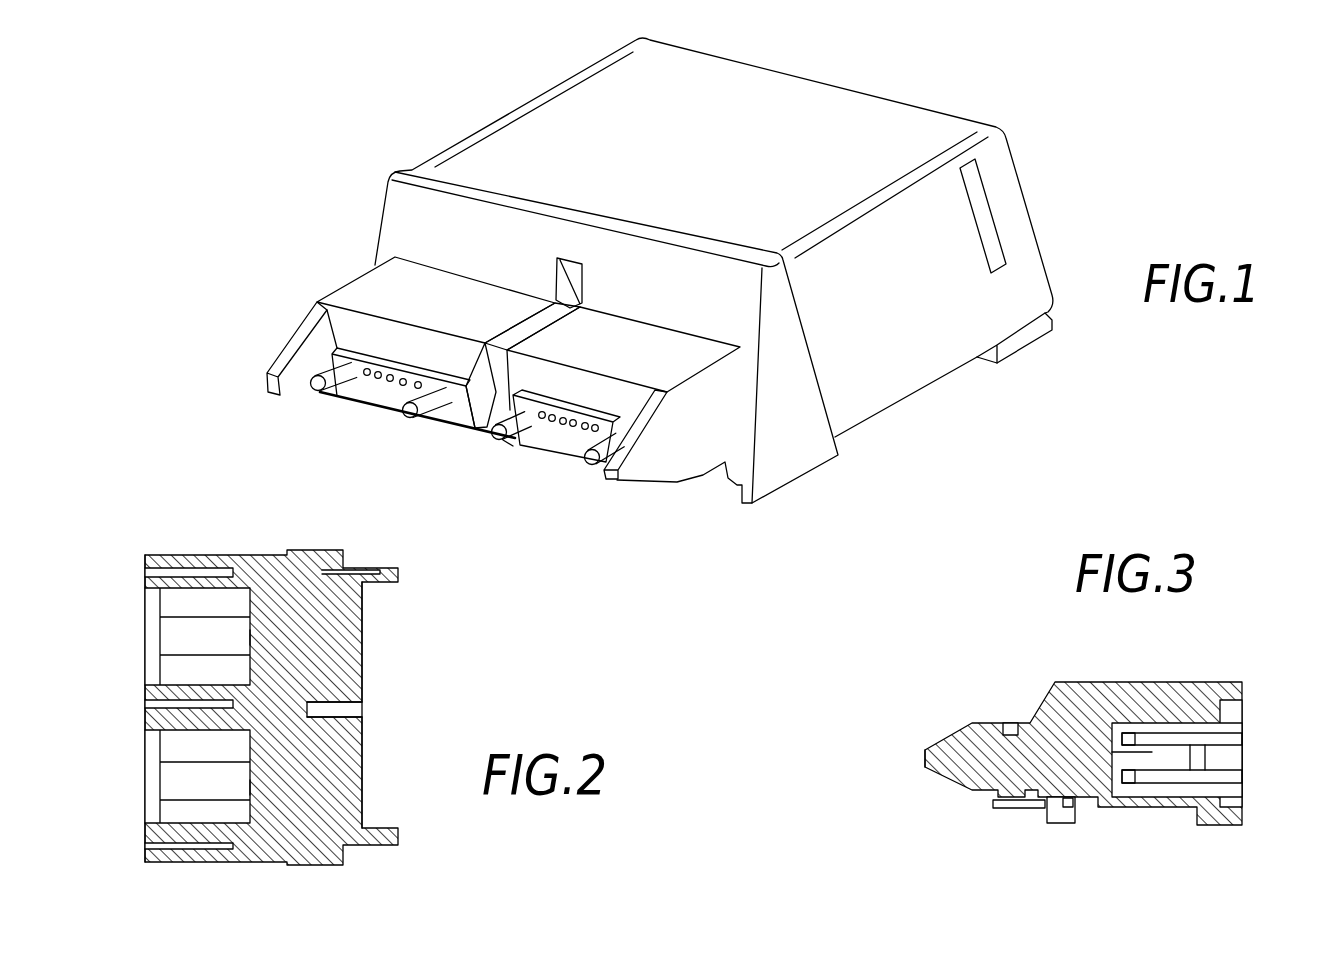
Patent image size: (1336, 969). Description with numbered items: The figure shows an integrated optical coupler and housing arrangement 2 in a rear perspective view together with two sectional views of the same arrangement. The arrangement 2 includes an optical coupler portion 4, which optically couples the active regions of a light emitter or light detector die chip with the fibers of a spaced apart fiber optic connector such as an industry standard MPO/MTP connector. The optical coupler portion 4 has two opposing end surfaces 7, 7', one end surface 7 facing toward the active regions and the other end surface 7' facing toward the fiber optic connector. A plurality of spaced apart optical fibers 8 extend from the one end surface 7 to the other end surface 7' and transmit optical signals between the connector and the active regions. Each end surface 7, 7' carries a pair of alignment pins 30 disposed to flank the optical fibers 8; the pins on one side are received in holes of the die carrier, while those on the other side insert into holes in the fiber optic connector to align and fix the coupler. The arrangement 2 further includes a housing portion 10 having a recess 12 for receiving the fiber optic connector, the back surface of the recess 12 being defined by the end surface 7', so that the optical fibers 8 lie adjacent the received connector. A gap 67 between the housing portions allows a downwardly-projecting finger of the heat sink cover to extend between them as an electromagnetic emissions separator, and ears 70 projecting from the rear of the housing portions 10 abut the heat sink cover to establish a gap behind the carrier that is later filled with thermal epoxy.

In FIG. 1, the integrated optical coupler and housing arrangement 2 is at (707, 523).
In FIG. 1, the optical coupler portion 4 is at (542, 440).
In FIG. 2, the optical coupler portion 4 is at (357, 663).
In FIG. 2, the end surface 7 is at (390, 705).
In FIG. 3, the end surface 7 is at (948, 707).
In FIG. 2, the end surface 7' is at (231, 706).
In FIG. 3, the end surface 7' is at (1135, 812).
In FIG. 1, the optical fibers 8 is at (377, 380).
In FIG. 1, the housing portion 10 is at (362, 293).
In FIG. 2, the housing portion 10 is at (167, 863).
In FIG. 3, the housing portion 10 is at (1143, 692).
In FIG. 2, the recess 12 is at (175, 635).
In FIG. 3, the recess 12 is at (1190, 757).
In FIG. 1, the alignment pins 30 is at (327, 390).
In FIG. 2, the gap 67 is at (353, 710).
In FIG. 1, the ears 70 is at (295, 383).
In FIG. 2, the ears 70 is at (383, 570).